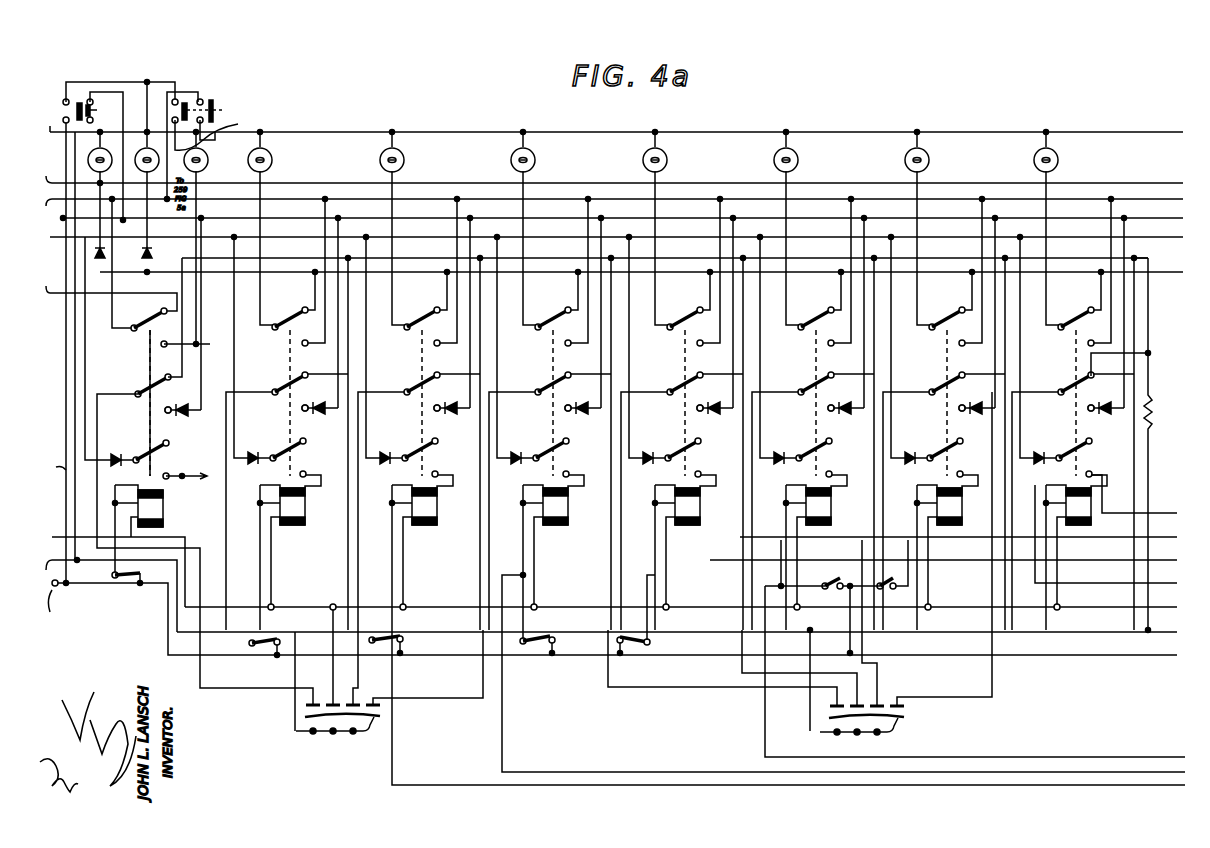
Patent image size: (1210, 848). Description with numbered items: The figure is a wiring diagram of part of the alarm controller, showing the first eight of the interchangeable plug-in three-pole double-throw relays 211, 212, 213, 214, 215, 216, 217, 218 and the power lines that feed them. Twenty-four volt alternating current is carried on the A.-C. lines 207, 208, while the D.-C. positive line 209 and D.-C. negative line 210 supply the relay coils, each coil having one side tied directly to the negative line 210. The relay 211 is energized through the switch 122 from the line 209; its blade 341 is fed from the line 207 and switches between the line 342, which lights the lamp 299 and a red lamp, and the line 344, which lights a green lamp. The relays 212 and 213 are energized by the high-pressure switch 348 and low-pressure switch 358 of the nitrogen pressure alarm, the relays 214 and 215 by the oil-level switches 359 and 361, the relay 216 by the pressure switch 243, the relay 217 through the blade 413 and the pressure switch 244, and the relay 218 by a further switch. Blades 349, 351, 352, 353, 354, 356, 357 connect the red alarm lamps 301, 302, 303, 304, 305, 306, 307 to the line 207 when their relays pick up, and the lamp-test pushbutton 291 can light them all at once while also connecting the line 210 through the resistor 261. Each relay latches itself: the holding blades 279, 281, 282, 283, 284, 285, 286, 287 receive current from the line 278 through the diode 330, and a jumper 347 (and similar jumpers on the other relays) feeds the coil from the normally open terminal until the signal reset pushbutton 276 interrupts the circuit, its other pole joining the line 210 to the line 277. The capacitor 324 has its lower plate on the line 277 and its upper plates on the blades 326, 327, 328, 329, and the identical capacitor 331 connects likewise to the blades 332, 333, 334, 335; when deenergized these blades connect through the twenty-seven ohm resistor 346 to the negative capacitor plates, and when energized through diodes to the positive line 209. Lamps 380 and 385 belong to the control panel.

The A.-C. line 207 is at (609, 184).
The D.-C. positive line 209 is at (609, 415).
The line 278 is at (609, 249).
The line 344 is at (105, 299).
The D.-C. negative line 210 is at (110, 559).
The line 277 is at (612, 617).
The diode 330 is at (1035, 451).
The A.-C. line 208 is at (104, 102).
The signal reset pushbutton 276 is at (84, 95).
The lamp test pushbutton 291 is at (192, 97).
The resistor 261 is at (221, 130).
The lamp 380 is at (104, 189).
The lamp 385 is at (142, 165).
The lamp 299 is at (208, 160).
The red alarm lamp 301 is at (272, 156).
The red alarm lamp 302 is at (404, 156).
The red alarm lamp 303 is at (535, 156).
The red alarm lamp 304 is at (667, 156).
The red alarm lamp 305 is at (798, 156).
The red alarm lamp 306 is at (929, 156).
The red alarm lamp 307 is at (1058, 156).
The blade 341 is at (134, 325).
The line 342 is at (202, 340).
The blade 326 is at (130, 404).
The blade 279 is at (140, 456).
The jumper 347 is at (106, 482).
The relay 211 is at (165, 503).
The switch 122 is at (112, 578).
The blade 349 is at (276, 322).
The blade 351 is at (410, 322).
The blade 352 is at (542, 322).
The blade 353 is at (674, 322).
The blade 354 is at (804, 322).
The blade 356 is at (936, 322).
The blade 357 is at (1063, 322).
The blade 327 is at (277, 388).
The blade 328 is at (409, 388).
The blade 329 is at (540, 388).
The blade 332 is at (672, 388).
The blade 333 is at (803, 388).
The blade 334 is at (934, 388).
The blade 335 is at (1063, 388).
The resistor 346 is at (1152, 406).
The blade 281 is at (292, 462).
The blade 282 is at (424, 462).
The blade 283 is at (554, 462).
The blade 284 is at (668, 466).
The blade 285 is at (798, 466).
The blade 286 is at (930, 466).
The blade 287 is at (1058, 466).
The relay 212 is at (300, 512).
The relay 213 is at (432, 508).
The relay 214 is at (565, 520).
The relay 215 is at (700, 520).
The relay 216 is at (831, 518).
The relay 217 is at (962, 522).
The relay 218 is at (1091, 512).
The blade 413 is at (920, 505).
The switch 348 is at (256, 646).
The switch 358 is at (402, 640).
The switch 359 is at (533, 644).
The switch 361 is at (650, 642).
The switch 243 is at (832, 583).
The switch 244 is at (882, 584).
The capacitor 324 is at (372, 722).
The capacitor 331 is at (898, 716).